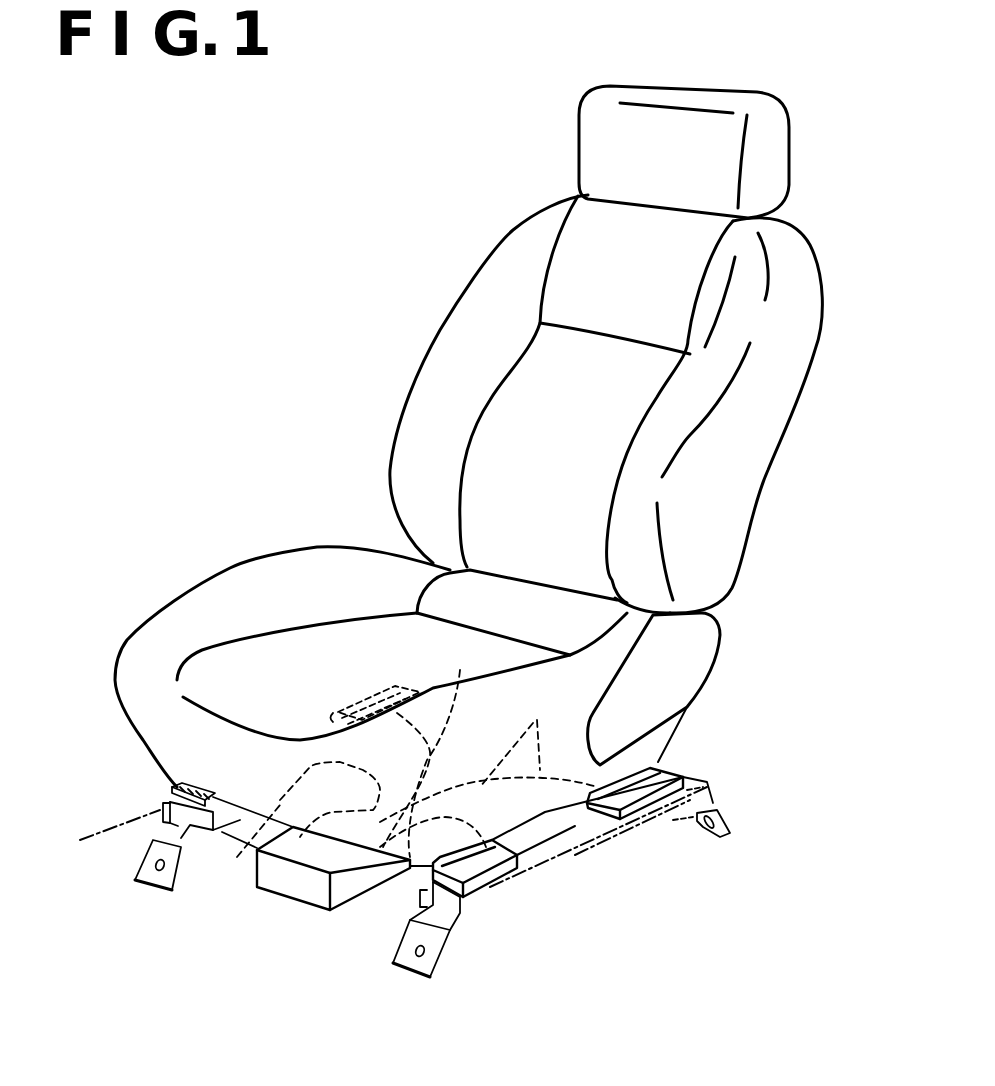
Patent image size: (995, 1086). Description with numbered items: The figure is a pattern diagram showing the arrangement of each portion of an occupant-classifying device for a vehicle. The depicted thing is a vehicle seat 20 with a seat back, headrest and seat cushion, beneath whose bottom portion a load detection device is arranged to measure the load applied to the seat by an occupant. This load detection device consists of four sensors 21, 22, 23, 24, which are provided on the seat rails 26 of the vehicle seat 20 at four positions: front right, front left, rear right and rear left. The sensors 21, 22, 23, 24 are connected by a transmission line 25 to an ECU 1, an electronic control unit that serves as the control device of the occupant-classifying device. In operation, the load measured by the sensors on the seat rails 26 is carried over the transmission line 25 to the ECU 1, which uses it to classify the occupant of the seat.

The ECU (electronic control unit) 1 is at (293, 887).
The vehicle seat 20 is at (480, 297).
The sensor 21 is at (133, 734).
The sensor 22 is at (357, 690).
The sensor 23 is at (493, 883).
The sensor 24 is at (640, 807).
The transmission line 25 is at (399, 763).
The seat rails 26 is at (620, 940).